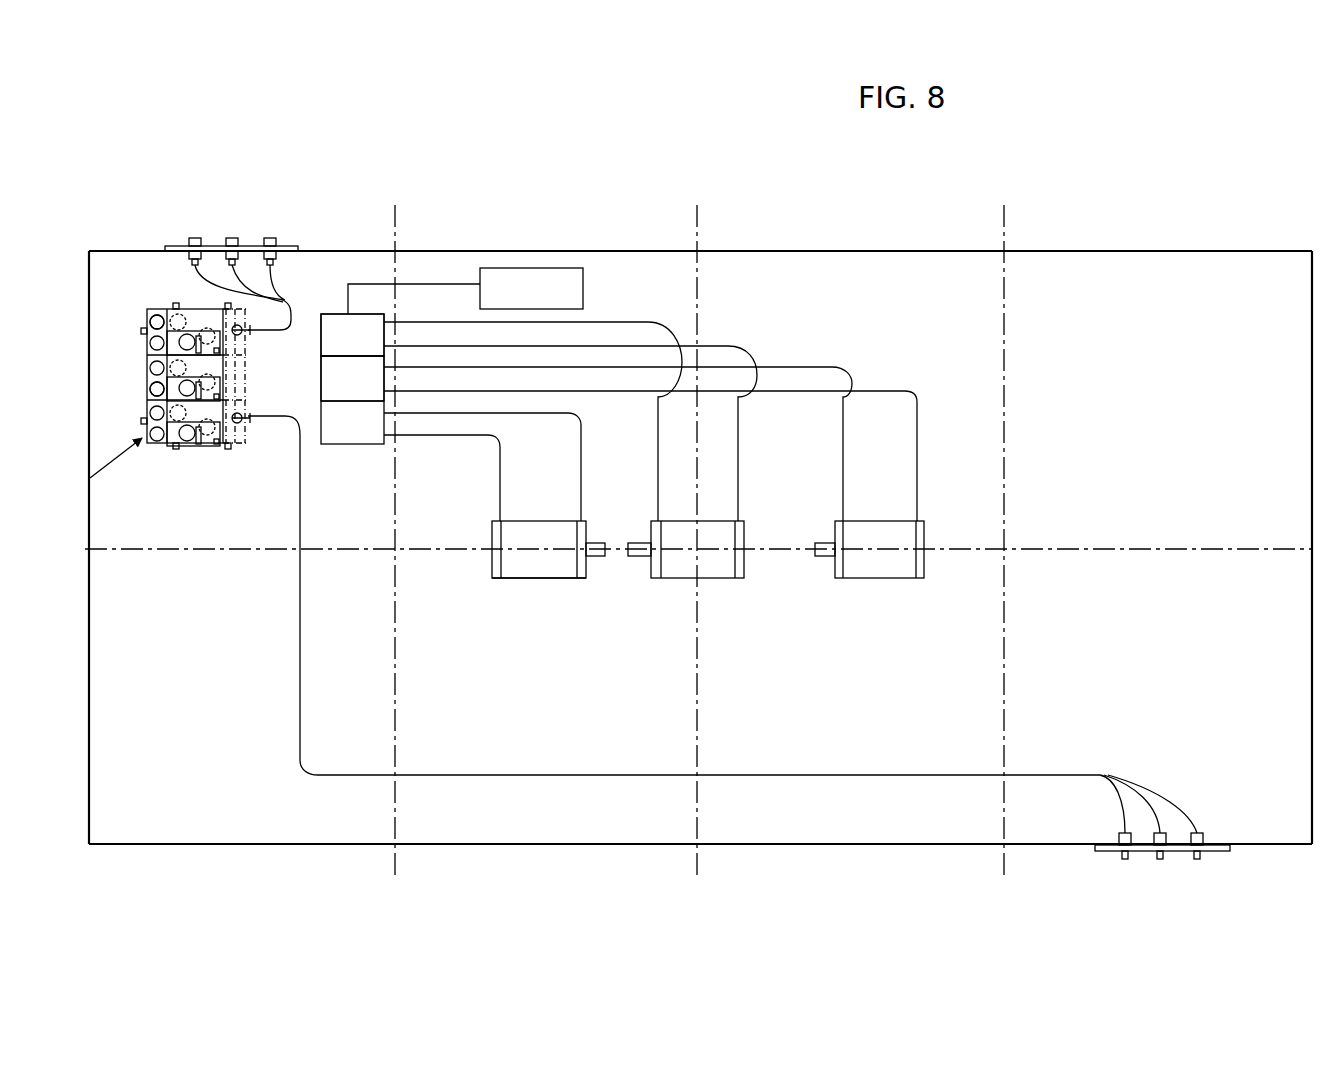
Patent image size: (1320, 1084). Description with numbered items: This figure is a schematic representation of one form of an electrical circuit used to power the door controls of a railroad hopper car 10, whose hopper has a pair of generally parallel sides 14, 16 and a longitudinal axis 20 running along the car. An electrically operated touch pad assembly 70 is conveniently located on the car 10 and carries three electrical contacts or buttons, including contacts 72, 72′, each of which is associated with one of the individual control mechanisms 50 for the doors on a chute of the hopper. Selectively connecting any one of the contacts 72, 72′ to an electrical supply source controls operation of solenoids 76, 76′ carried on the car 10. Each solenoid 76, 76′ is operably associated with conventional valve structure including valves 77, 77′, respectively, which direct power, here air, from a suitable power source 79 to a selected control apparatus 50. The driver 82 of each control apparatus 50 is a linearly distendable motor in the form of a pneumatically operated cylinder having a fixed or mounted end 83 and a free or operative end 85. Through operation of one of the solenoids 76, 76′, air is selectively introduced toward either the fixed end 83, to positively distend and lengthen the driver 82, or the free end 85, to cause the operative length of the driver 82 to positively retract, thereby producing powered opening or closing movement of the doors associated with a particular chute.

The railroad hopper car 10 is at (1205, 178).
The side 14 is at (823, 850).
The side 16 is at (895, 250).
The longitudinal axis 20 is at (1047, 548).
The control apparatus 50 is at (525, 565).
The touch pad assembly 70 is at (312, 243).
The electrical contact 72 is at (270, 238).
The electrical contact 72′ is at (232, 238).
The solenoid 76 is at (190, 458).
The solenoid 76′ is at (165, 385).
The valve 77 is at (337, 447).
The valve 77′ is at (328, 386).
The power source 79 is at (586, 292).
The driver 82 is at (530, 530).
The fixed end 83 is at (493, 578).
The free end 85 is at (598, 558).